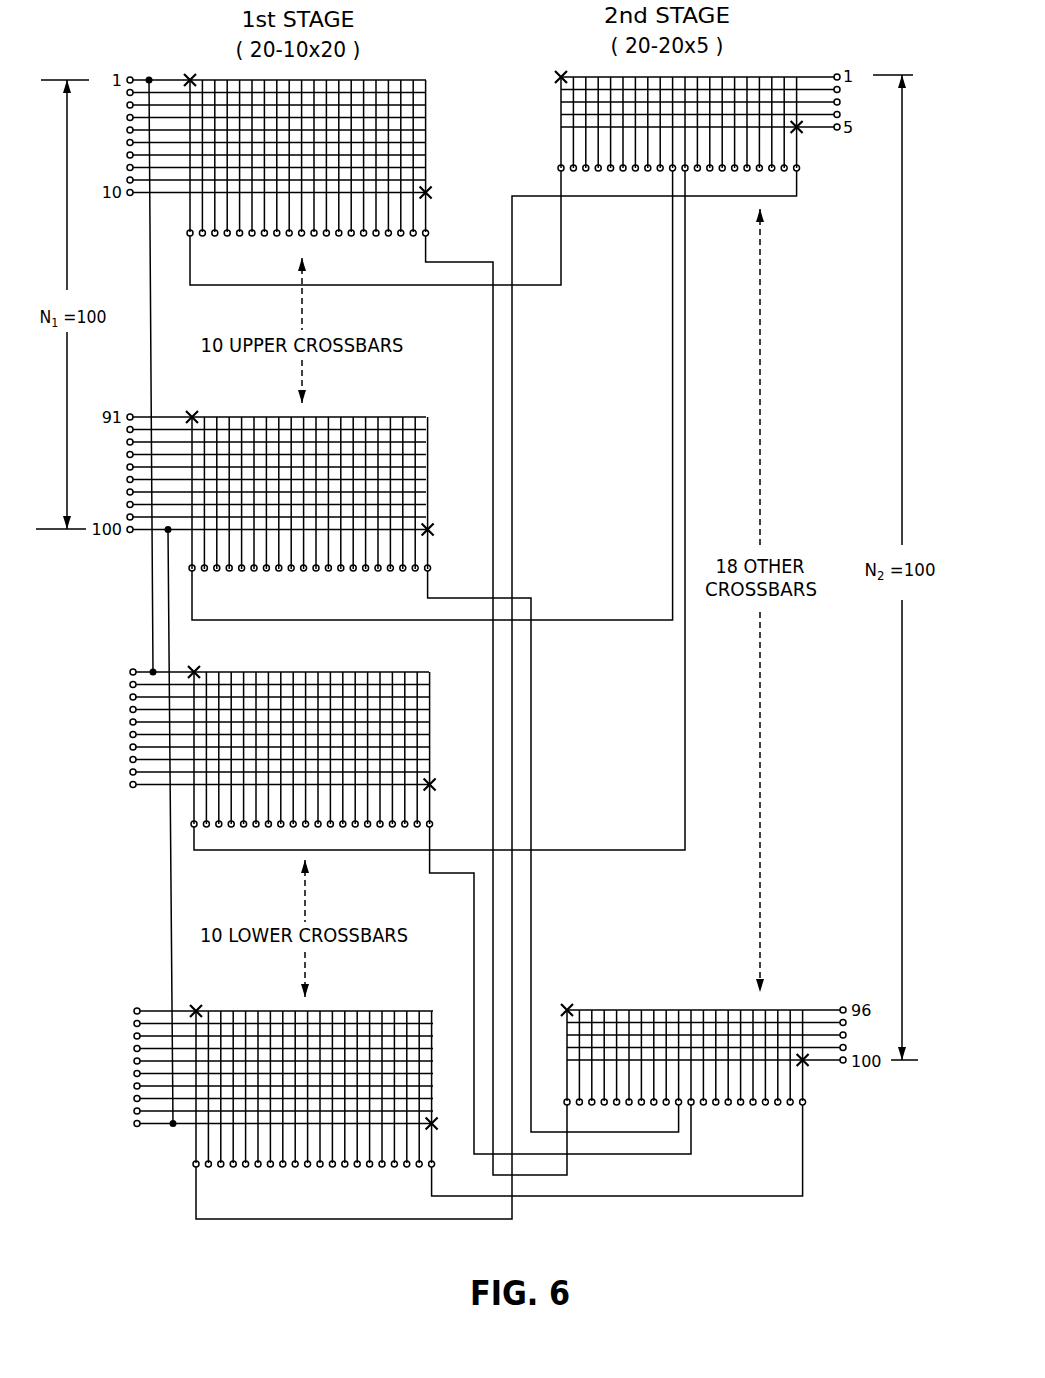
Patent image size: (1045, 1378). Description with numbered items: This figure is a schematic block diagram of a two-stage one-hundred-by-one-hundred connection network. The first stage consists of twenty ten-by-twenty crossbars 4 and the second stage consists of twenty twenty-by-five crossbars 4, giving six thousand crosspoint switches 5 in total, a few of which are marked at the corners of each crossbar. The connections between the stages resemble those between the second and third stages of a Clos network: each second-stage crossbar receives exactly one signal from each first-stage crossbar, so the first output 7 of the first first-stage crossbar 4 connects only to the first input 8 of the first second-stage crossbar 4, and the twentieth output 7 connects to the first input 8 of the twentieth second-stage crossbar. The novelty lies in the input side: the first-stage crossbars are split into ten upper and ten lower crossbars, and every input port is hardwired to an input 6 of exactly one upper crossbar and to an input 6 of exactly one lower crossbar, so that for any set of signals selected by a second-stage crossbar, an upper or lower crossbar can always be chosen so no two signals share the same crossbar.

The crossbar 4 is at (418, 126).
The crosspoint switch 5 is at (190, 77).
The input 6 is at (170, 79).
The output 7 is at (428, 233).
The input 8 is at (560, 168).